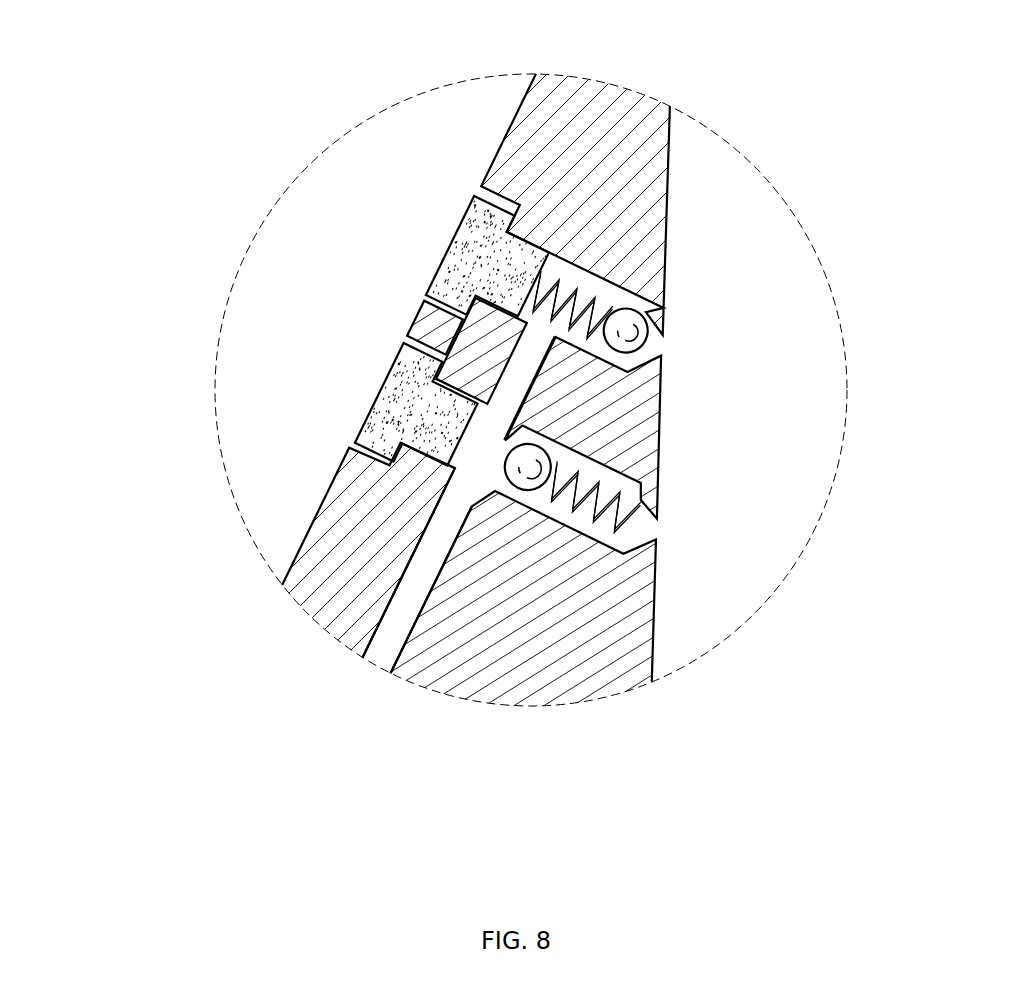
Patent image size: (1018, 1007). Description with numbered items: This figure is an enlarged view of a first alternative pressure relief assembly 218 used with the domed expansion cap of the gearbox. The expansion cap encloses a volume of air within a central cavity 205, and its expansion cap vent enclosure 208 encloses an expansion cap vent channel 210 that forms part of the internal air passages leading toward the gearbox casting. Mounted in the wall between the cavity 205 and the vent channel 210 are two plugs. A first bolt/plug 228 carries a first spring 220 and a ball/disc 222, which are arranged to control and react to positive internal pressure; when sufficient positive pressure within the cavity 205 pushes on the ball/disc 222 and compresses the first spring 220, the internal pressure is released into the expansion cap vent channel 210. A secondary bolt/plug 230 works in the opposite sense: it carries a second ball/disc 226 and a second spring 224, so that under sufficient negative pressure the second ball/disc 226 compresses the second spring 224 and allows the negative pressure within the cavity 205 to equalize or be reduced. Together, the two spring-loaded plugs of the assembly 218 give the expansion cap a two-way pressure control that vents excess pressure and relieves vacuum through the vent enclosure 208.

The central cavity 205 is at (737, 590).
The expansion cap vent enclosure 208 is at (355, 582).
The expansion cap vent channel 210 is at (460, 500).
The first alternative pressure relief assembly 218 is at (417, 117).
The first spring 220 is at (577, 293).
The ball/disc 222 is at (646, 312).
The second spring 224 is at (600, 502).
The second ball/disc 226 is at (518, 470).
The first bolt/plug 228 is at (467, 253).
The secondary bolt/plug 230 is at (407, 397).